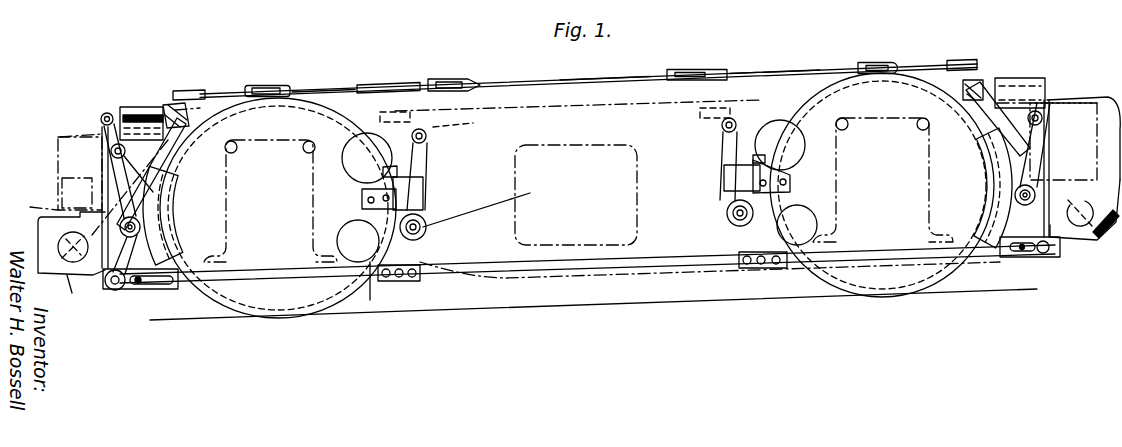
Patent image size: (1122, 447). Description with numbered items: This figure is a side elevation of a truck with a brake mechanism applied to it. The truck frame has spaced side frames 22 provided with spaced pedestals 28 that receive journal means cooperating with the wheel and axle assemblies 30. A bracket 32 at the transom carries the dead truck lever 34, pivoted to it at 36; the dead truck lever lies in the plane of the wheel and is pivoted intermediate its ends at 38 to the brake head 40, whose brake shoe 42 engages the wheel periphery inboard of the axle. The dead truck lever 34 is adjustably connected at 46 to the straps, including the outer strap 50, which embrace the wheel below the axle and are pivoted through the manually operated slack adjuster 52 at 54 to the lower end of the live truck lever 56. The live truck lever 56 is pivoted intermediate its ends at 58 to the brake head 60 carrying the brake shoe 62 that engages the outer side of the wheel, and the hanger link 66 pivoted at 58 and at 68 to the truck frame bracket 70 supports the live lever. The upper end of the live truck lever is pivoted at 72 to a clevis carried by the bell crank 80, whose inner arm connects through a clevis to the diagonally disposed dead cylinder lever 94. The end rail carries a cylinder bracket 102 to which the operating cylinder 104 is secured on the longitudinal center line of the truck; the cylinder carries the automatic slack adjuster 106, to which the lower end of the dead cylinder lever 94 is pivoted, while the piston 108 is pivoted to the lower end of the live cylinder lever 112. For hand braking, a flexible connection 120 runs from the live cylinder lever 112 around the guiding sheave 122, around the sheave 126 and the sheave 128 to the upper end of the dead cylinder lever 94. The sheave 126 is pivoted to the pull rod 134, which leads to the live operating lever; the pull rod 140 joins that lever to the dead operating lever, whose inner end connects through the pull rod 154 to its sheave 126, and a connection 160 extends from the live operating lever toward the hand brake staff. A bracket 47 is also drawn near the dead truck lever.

The side frame 22 is at (590, 268).
The pedestal 28 is at (320, 182).
The wheel and axle assembly 30 is at (300, 306).
The bracket 32 is at (466, 122).
The dead truck lever 34 is at (428, 170).
The pivotal connection 36 is at (407, 133).
The pivotal connection 38 is at (488, 207).
The brake head 40 is at (413, 262).
The brake shoe 42 is at (370, 300).
The adjustable connection 46 is at (407, 282).
The bracket 47 is at (363, 203).
The outer strap 50 is at (240, 283).
The manually operated slack adjuster 52 is at (120, 291).
The pivotal connection 54 is at (147, 285).
The live truck lever 56 is at (100, 145).
The pivotal connection 58 is at (142, 225).
The brake head 60 is at (147, 238).
The brake shoe 62 is at (167, 252).
The hanger link 66 is at (152, 188).
The pivotal connection 68 is at (127, 153).
The truck frame bracket 70 is at (105, 113).
The pivotal connection 72 is at (113, 114).
The bell crank 80 is at (152, 107).
The dead cylinder lever 94 is at (988, 134).
The cylinder bracket 102 is at (1113, 112).
The operating cylinder 104 is at (70, 291).
The automatic slack adjuster 106 is at (1098, 237).
The piston 108 is at (73, 237).
The live cylinder lever 112 is at (80, 173).
The flexible connection 120 is at (230, 91).
The guiding sheave 122 is at (180, 91).
The sheave 126 is at (897, 63).
The sheave 128 is at (967, 60).
The pull rod 134 is at (322, 89).
The pull rod 140 is at (606, 79).
The pull rod 154 is at (775, 72).
The connection 160 is at (376, 85).